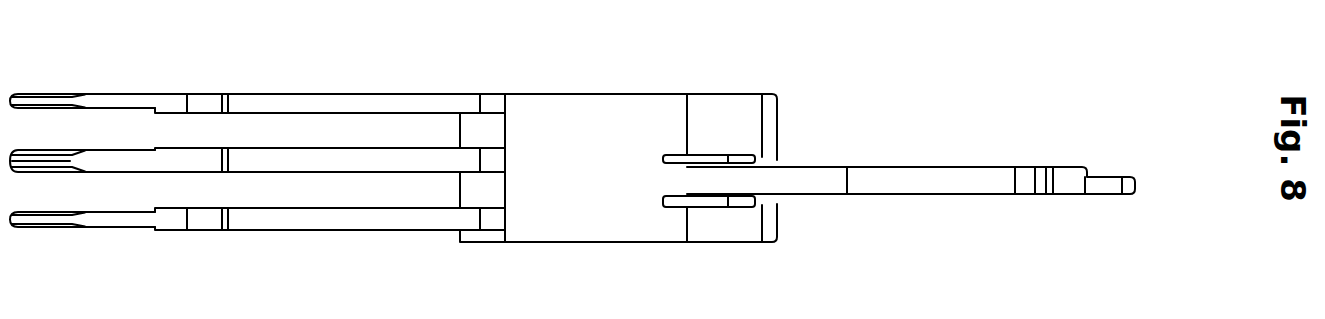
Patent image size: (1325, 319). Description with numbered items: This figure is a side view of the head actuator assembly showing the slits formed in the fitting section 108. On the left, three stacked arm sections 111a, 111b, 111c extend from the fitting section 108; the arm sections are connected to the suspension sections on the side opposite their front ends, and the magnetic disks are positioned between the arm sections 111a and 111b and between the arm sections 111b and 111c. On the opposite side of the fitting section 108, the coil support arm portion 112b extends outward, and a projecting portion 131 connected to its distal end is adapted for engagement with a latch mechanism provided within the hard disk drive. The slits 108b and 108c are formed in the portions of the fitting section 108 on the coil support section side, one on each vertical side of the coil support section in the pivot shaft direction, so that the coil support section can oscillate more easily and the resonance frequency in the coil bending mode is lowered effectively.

The fitting section 108 is at (617, 93).
The slit 108b is at (770, 160).
The slit 108c is at (770, 198).
The arm section 111a is at (107, 102).
The arm section 111b is at (183, 149).
The arm section 111c is at (107, 224).
The coil support arm portion 112b is at (923, 167).
The projecting portion 131 is at (1110, 175).